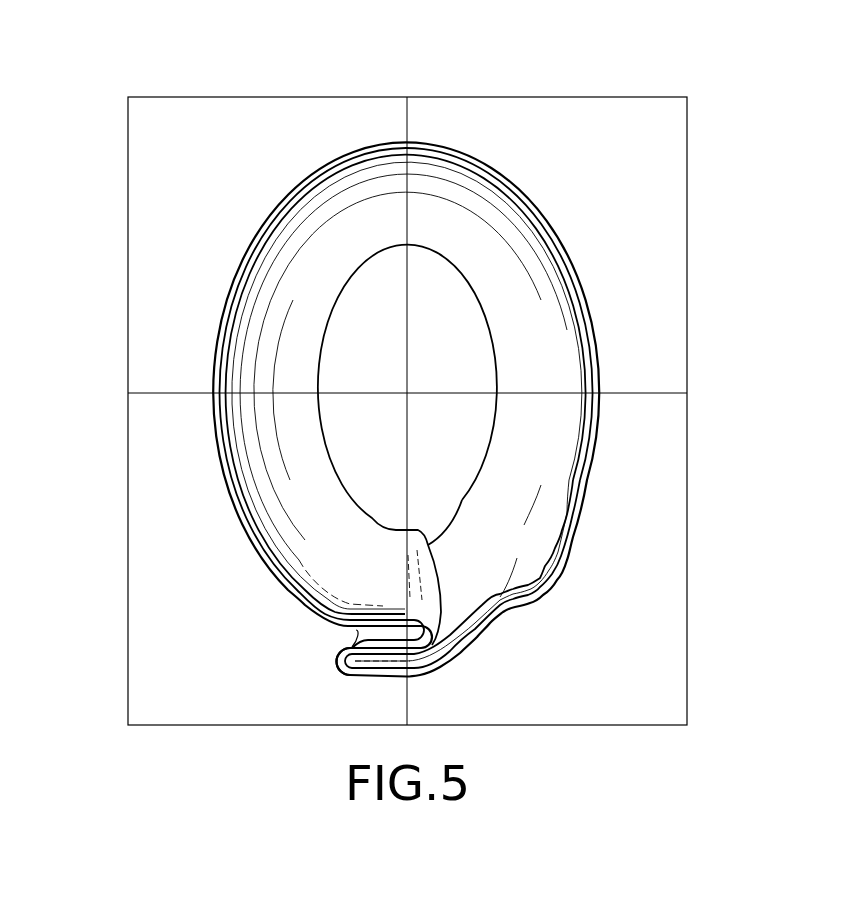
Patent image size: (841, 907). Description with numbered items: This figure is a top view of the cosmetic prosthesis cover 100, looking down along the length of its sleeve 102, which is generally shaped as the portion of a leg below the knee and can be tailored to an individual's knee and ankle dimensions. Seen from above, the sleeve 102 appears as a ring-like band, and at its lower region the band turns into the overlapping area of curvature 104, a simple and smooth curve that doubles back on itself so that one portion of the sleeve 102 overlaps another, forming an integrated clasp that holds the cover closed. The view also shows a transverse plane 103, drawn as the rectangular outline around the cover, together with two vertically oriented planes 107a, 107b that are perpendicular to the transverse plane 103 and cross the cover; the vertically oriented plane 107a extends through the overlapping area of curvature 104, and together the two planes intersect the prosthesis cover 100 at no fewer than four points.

The prosthesis cover 100 is at (487, 83).
The sleeve 102 is at (500, 205).
The transverse plane 103 is at (648, 133).
The overlapping area of curvature 104 is at (322, 658).
The vertically oriented plane 107a is at (407, 125).
The vertically oriented plane 107b is at (165, 393).